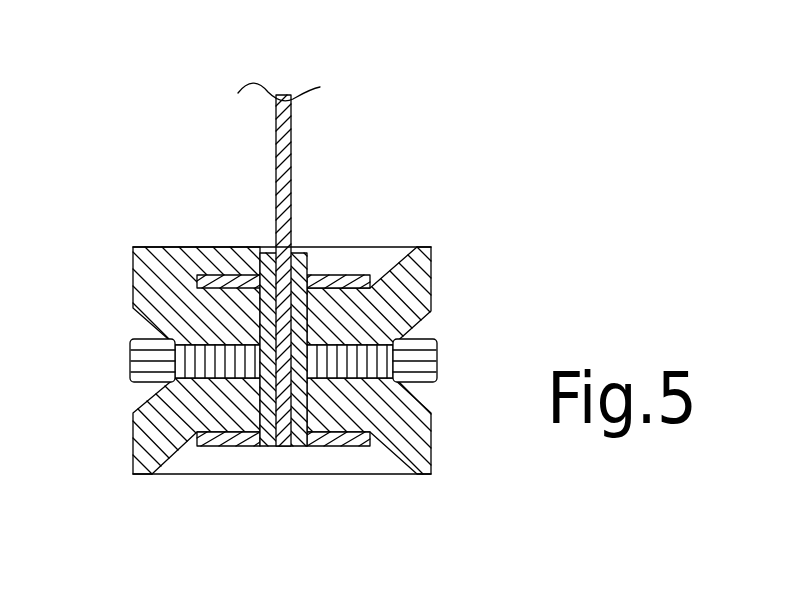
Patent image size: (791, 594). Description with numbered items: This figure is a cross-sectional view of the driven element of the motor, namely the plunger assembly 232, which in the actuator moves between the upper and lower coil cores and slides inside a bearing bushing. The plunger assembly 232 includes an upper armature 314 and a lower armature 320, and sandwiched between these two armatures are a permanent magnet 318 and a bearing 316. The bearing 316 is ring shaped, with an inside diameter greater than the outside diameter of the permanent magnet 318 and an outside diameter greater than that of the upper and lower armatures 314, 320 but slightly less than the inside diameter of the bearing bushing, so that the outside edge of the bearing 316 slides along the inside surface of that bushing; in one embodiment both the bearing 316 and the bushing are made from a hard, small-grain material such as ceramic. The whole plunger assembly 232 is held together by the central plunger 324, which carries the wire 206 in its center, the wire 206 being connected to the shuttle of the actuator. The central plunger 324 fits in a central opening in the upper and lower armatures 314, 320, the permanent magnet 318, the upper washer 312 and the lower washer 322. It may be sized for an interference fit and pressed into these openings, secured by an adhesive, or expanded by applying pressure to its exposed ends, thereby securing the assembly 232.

The wire 206 is at (292, 168).
The plunger assembly 232 is at (317, 320).
The upper washer 312 is at (228, 275).
The upper armature 314 is at (133, 282).
The bearing 316 is at (130, 363).
The permanent magnet 318 is at (414, 316).
The lower armature 320 is at (133, 448).
The lower washer 322 is at (204, 447).
The central plunger 324 is at (299, 447).